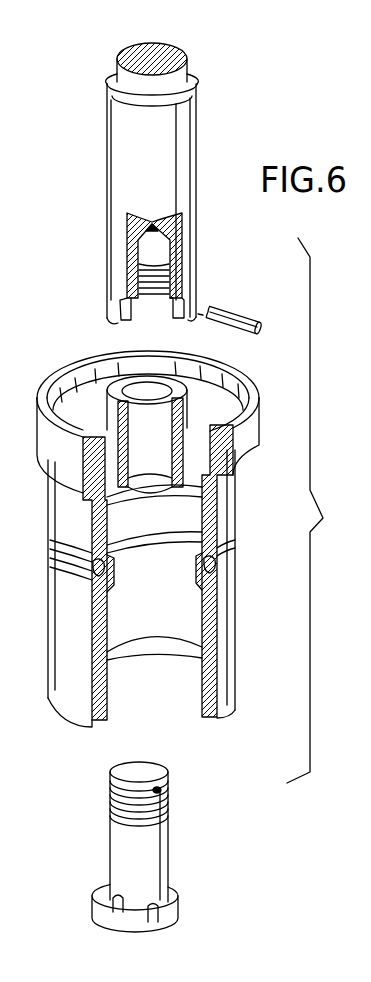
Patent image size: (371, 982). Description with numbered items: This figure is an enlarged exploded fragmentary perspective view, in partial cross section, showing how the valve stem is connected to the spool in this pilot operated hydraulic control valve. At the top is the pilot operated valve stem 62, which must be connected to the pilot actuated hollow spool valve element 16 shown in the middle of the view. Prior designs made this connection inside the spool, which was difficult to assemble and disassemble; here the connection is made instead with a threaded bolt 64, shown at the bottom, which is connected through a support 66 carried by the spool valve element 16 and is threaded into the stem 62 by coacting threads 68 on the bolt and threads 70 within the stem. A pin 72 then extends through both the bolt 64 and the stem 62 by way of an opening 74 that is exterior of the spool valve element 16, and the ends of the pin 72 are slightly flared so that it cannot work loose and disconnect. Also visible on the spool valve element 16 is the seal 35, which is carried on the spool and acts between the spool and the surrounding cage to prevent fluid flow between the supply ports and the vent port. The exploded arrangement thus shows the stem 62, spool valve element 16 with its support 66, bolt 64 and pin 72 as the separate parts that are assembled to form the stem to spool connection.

The spool valve element 16 is at (236, 522).
The seal 35 is at (238, 563).
The valve stem 62 is at (192, 130).
The threaded bolt 64 is at (167, 868).
The support 66 is at (184, 390).
The threads 68 is at (107, 792).
The threads 70 is at (182, 263).
The pin 72 is at (233, 314).
The opening 74 is at (163, 790).